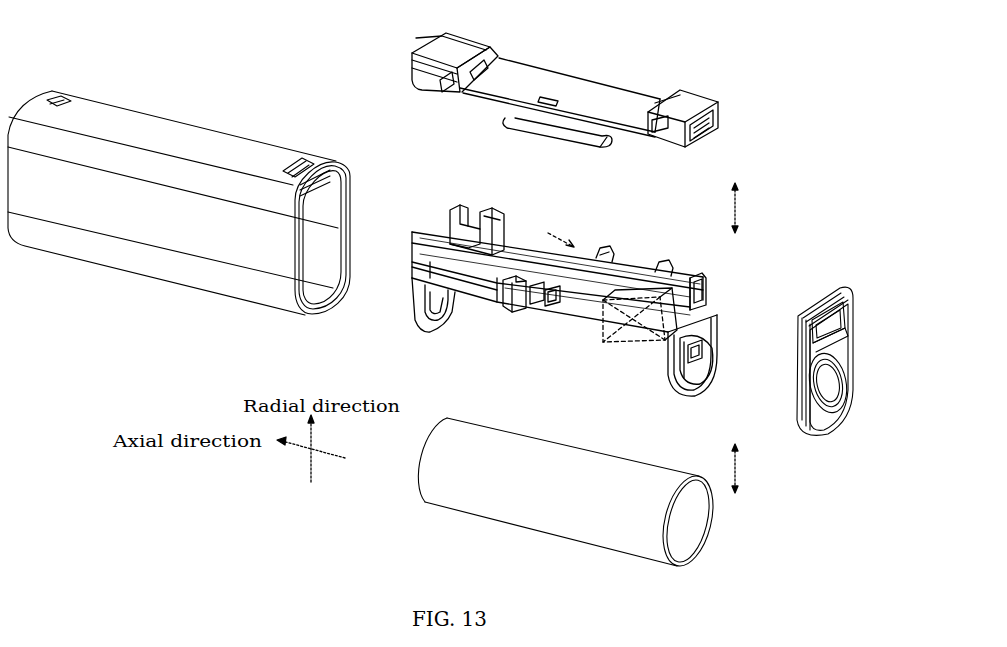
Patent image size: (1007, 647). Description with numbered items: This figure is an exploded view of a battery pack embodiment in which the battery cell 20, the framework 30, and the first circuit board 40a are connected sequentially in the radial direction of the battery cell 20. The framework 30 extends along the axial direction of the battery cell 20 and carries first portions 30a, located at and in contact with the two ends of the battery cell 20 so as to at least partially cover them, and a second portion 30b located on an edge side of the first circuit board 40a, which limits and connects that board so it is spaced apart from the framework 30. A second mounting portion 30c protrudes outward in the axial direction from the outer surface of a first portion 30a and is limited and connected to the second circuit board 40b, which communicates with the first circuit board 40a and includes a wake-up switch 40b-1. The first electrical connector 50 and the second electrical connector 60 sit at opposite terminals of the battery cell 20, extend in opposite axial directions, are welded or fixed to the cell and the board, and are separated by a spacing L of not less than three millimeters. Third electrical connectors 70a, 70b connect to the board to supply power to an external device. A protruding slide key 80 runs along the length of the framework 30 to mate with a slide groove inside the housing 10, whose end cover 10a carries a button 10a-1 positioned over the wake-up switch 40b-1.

The housing 10 is at (135, 276).
The end cover 10a is at (352, 214).
The button 10a-1 is at (842, 382).
The battery cell 20 is at (555, 535).
The framework 30 is at (627, 266).
The first portion 30a is at (427, 336).
The second portion 30b is at (602, 244).
The second mounting portion 30c is at (717, 322).
The first circuit board 40a is at (585, 73).
The second circuit board 40b is at (709, 373).
The wake-up switch 40b-1 is at (712, 352).
The first electrical connector 50 is at (510, 232).
The second electrical connector 60 is at (538, 302).
The third electrical connector 70a is at (462, 33).
The third electrical connector 70b is at (695, 93).
The slide key 80 is at (608, 317).
The spacing L is at (561, 230).